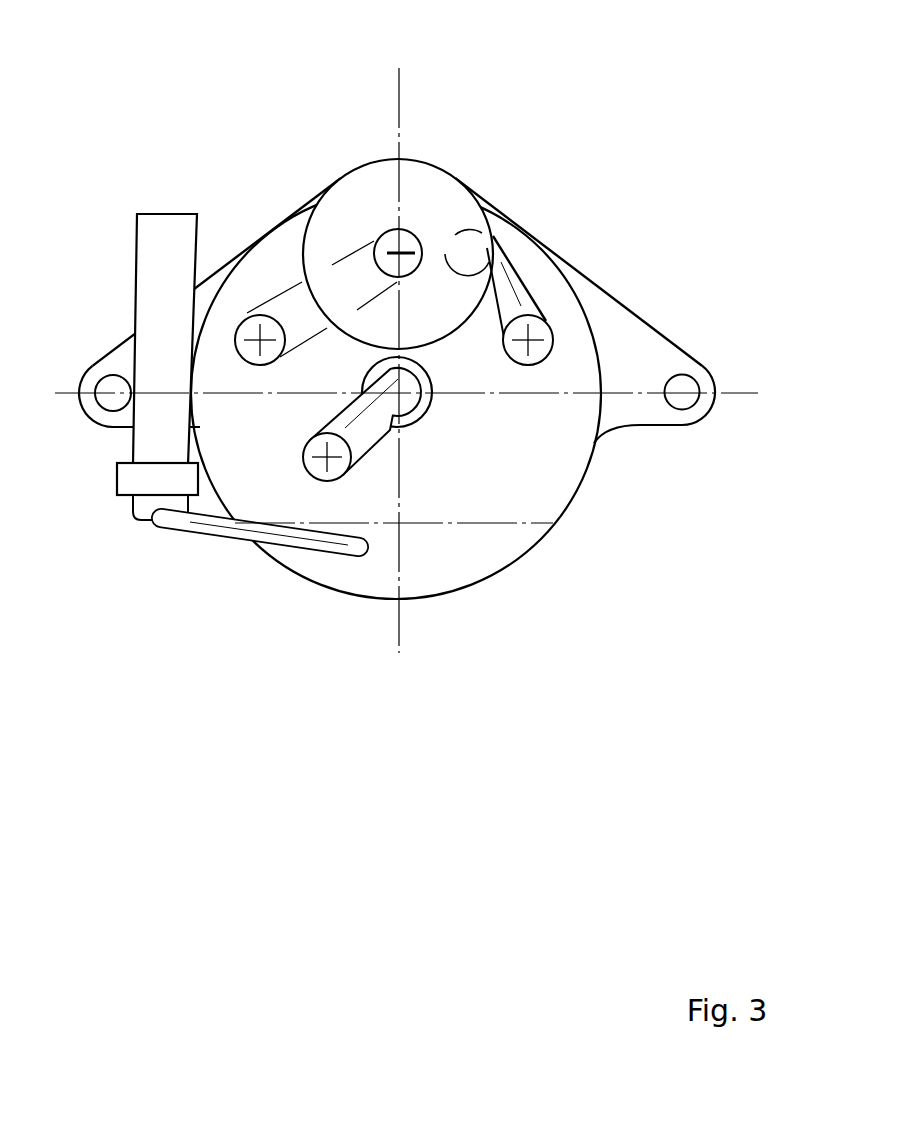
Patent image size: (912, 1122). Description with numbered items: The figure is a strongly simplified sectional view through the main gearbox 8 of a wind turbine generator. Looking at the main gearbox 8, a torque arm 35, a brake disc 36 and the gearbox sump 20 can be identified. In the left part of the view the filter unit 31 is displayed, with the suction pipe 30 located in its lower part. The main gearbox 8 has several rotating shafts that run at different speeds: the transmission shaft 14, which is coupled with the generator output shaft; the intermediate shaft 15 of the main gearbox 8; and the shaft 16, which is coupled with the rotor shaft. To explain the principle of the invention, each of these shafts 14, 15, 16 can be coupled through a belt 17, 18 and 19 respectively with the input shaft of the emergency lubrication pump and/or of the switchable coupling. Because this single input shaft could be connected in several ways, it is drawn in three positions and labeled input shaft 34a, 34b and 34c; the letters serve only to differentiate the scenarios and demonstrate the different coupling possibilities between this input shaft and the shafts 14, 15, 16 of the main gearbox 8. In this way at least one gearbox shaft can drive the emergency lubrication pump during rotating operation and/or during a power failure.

The main gearbox 8 is at (462, 67).
The transmission shaft 14 is at (410, 243).
The intermediate shaft 15 is at (475, 243).
The shaft 16 is at (420, 385).
The belt 17 is at (332, 265).
The belt 18 is at (518, 275).
The belt 19 is at (390, 430).
The gearbox sump 20 is at (338, 577).
The suction pipe 30 is at (198, 523).
The filter unit 31 is at (153, 270).
The input shaft 34a is at (245, 322).
The input shaft 34b is at (538, 332).
The input shaft 34c is at (337, 467).
The torque arm 35 is at (643, 345).
The brake disc 36 is at (345, 195).